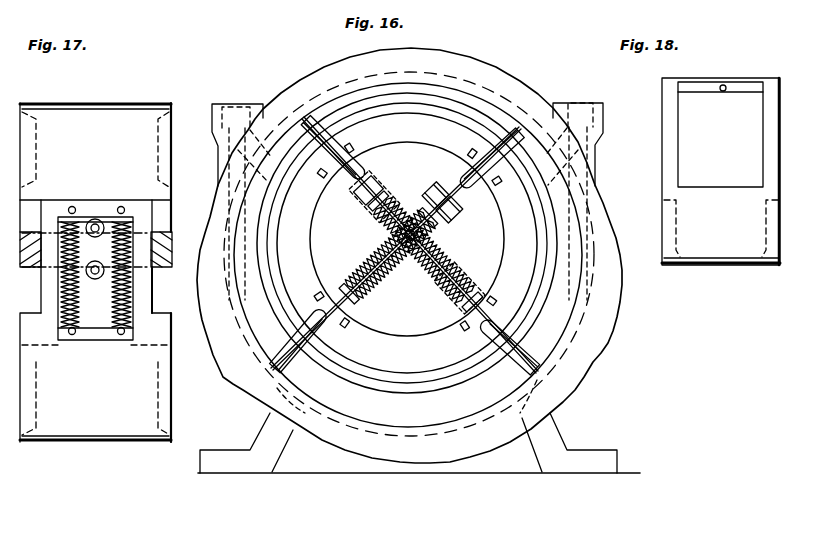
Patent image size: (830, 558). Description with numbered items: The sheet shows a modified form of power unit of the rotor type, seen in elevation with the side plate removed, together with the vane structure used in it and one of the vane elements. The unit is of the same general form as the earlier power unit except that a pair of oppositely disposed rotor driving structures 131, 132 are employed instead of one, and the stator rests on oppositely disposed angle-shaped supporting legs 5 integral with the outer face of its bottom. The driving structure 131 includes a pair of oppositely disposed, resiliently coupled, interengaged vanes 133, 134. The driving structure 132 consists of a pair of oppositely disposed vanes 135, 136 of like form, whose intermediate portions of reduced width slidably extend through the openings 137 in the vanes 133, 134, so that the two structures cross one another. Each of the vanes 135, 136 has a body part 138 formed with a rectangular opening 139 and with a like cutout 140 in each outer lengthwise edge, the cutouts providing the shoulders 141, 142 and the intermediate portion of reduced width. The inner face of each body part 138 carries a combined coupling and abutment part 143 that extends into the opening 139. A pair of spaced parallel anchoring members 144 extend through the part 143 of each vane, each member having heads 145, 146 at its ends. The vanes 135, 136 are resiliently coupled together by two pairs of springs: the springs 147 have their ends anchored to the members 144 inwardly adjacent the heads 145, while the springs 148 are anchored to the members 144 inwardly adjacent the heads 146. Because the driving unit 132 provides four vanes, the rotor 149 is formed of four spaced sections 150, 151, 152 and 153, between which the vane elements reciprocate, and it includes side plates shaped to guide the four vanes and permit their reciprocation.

In FIG. 16, the supporting legs 5 is at (262, 442).
In FIG. 16, the rotor driving structure 131 is at (425, 300).
In FIG. 16, the rotor driving structure 132 is at (444, 181).
In FIG. 17, the vane 133 is at (167, 238).
In FIG. 16, the vane 133 is at (448, 258).
In FIG. 17, the vane 134 is at (158, 262).
In FIG. 16, the vane 134 is at (462, 305).
In FIG. 17, the vane 135 is at (127, 131).
In FIG. 16, the vane 135 is at (352, 268).
In FIG. 17, the vane 136 is at (124, 416).
In FIG. 16, the vane 136 is at (414, 278).
In FIG. 17, the openings 137 is at (43, 232).
In FIG. 18, the openings 137 is at (727, 130).
In FIG. 17, the body part 138 is at (62, 413).
In FIG. 18, the body part 138 is at (672, 124).
In FIG. 17, the rectangular opening 139 is at (96, 274).
In FIG. 17, the cutout 140 is at (32, 300).
In FIG. 17, the shoulder 141 is at (172, 228).
In FIG. 17, the shoulder 142 is at (100, 337).
In FIG. 17, the combined coupling and abutment part 143 is at (97, 340).
In FIG. 17, the anchoring members 144 is at (120, 207).
In FIG. 16, the anchoring members 144 is at (452, 216).
In FIG. 16, the head 145 is at (410, 190).
In FIG. 16, the head 146 is at (478, 234).
In FIG. 16, the springs 147 is at (362, 226).
In FIG. 16, the springs 148 is at (430, 302).
In FIG. 16, the rotor 149 is at (459, 123).
In FIG. 16, the rotor section 150 is at (370, 132).
In FIG. 16, the rotor section 151 is at (348, 268).
In FIG. 16, the rotor section 152 is at (468, 368).
In FIG. 16, the rotor section 153 is at (508, 290).